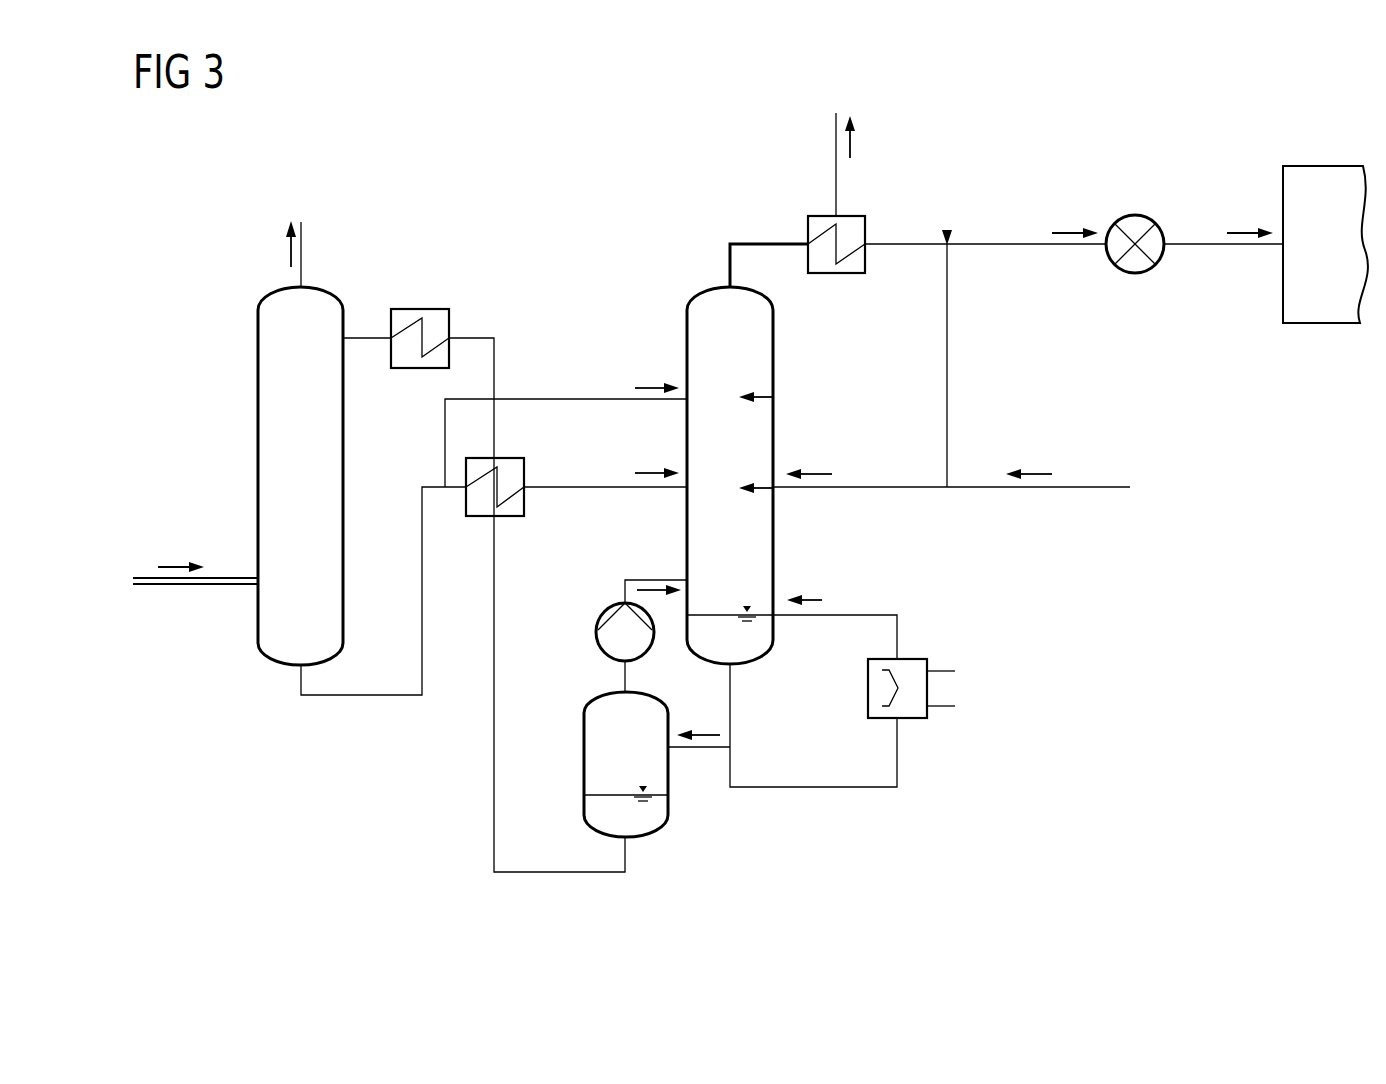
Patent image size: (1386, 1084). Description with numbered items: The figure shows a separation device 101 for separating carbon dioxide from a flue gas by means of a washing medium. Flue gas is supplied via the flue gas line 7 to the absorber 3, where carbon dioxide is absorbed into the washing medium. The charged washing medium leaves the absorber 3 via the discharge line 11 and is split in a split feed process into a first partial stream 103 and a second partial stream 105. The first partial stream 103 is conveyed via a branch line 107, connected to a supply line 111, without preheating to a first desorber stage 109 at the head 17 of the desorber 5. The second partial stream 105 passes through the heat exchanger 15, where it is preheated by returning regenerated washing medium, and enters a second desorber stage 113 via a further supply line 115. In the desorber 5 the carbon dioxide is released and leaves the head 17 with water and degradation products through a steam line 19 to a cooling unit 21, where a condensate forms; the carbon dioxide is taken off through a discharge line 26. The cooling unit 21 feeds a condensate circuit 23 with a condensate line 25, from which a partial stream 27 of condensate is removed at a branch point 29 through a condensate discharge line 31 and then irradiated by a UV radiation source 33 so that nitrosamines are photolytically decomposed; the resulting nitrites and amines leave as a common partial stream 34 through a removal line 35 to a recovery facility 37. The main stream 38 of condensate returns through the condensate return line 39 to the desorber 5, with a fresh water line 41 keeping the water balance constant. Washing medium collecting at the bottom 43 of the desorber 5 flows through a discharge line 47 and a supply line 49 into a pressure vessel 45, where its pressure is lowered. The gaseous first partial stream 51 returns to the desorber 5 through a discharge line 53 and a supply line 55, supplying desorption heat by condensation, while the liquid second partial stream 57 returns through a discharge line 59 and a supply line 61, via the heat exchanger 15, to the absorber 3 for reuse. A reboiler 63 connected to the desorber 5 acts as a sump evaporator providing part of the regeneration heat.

The absorber 3 is at (258, 424).
The desorber 5 is at (773, 347).
The flue gas line 7 is at (180, 586).
The discharge line 11 is at (358, 697).
The heat exchanger 15 is at (515, 518).
The head 17 is at (705, 287).
The steam line 19 is at (770, 244).
The cooling unit 21 is at (855, 275).
The condensate circuit 23 is at (966, 397).
The condensate line 25 is at (905, 244).
The discharge line 26 is at (836, 143).
The partial stream 27 is at (1026, 207).
The branch point 29 is at (949, 230).
The condensate discharge line 31 is at (1025, 244).
The radiation source 33 is at (1135, 214).
The common partial stream 34 is at (1223, 207).
The removal line 35 is at (1200, 244).
The recovery facility 37 is at (1323, 166).
The main stream 38 is at (860, 449).
The condensate return line 39 is at (872, 487).
The fresh water line 41 is at (1102, 487).
The bottom 43 is at (758, 643).
The pressure vessel 45 is at (584, 762).
The discharge line 47 is at (733, 705).
The supply line 49 is at (695, 748).
The first partial stream 51 is at (647, 553).
The discharge line 53 is at (622, 675).
The supply line 55 is at (655, 580).
The second partial stream 57 is at (557, 873).
The discharge line 59 is at (576, 911).
The supply line 61 is at (480, 338).
The reboiler 63 is at (956, 644).
The separation device 101 is at (1092, 116).
The first partial stream 103 is at (620, 361).
The second partial stream 105 is at (605, 449).
The branch line 107 is at (445, 443).
The first desorber stage 109 is at (773, 397).
The supply line 111 is at (594, 399).
The second desorber stage 113 is at (773, 490).
The further supply line 115 is at (594, 487).